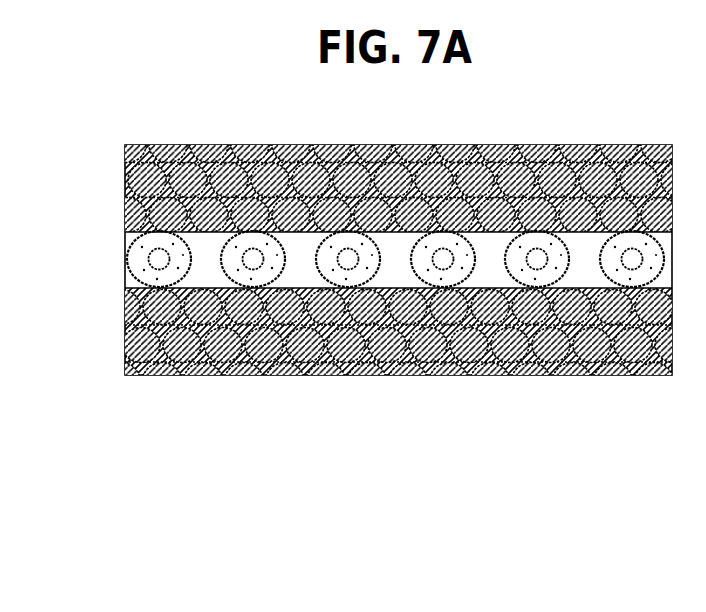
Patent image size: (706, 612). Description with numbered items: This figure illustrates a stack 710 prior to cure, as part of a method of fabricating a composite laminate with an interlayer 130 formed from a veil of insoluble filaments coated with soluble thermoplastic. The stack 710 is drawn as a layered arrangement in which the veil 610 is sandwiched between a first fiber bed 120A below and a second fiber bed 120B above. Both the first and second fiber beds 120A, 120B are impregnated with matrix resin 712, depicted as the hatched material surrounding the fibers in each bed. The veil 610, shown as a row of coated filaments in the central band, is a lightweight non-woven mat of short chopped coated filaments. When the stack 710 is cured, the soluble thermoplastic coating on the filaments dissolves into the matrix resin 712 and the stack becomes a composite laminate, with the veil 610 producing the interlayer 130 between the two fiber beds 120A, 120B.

The stack 710 is at (385, 425).
The matrix resin 712 is at (190, 145).
The second fiber bed 120B is at (603, 145).
The first fiber bed 120A is at (590, 372).
The interlayer 130 is at (415, 259).
The veil 610 is at (117, 263).